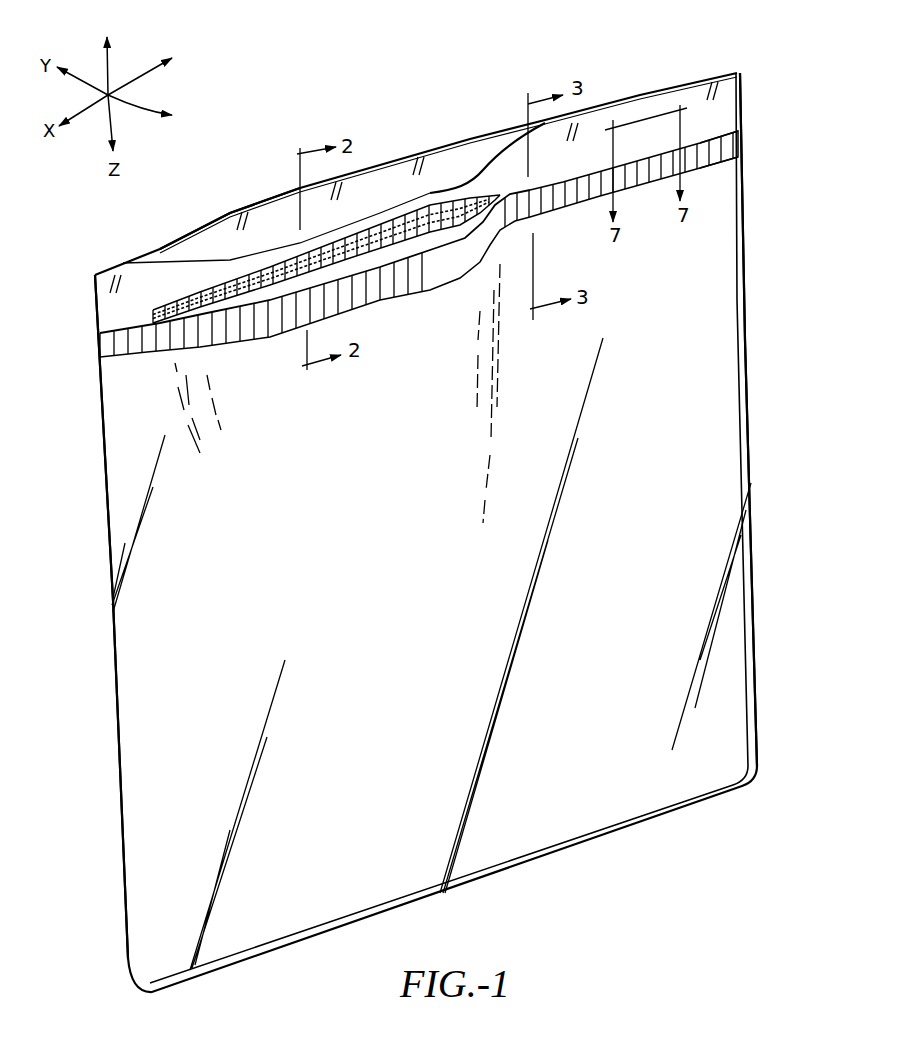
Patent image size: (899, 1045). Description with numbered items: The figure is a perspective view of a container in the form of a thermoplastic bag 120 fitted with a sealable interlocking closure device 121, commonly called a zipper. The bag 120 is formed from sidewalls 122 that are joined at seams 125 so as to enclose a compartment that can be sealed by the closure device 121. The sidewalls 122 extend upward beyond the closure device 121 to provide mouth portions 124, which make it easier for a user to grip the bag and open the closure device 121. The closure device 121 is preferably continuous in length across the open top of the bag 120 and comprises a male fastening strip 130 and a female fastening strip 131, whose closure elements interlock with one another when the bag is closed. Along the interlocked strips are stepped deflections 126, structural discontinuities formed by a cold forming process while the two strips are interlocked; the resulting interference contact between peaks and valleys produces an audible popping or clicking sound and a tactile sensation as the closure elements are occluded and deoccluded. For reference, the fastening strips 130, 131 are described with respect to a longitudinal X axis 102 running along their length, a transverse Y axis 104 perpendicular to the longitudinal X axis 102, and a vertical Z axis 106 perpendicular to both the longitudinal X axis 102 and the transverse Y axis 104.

The longitudinal X axis 102 is at (160, 70).
The transverse Y axis 104 is at (161, 112).
The vertical Z axis 106 is at (105, 54).
The thermoplastic bag 120 is at (766, 346).
The closure device 121 is at (748, 126).
The sidewalls 122 is at (703, 478).
The mouth portions 124 is at (221, 214).
The seams 125 is at (746, 226).
The stepped deflections 126 is at (586, 180).
The male fastening strip 130 is at (151, 306).
The female fastening strip 131 is at (158, 345).